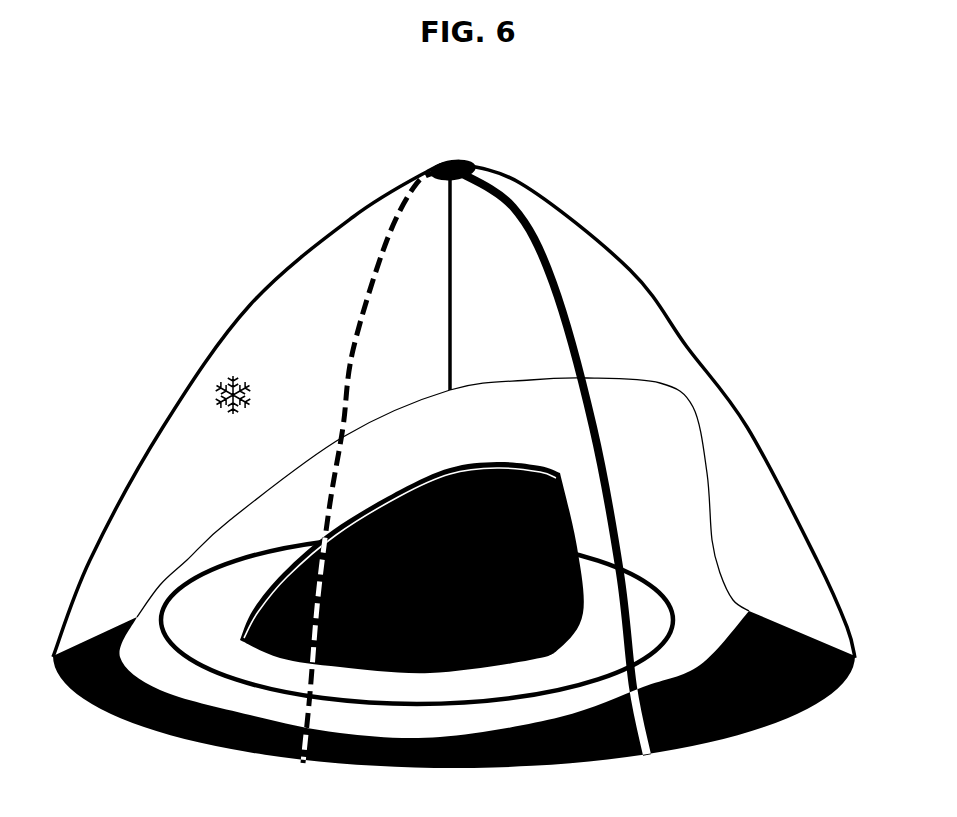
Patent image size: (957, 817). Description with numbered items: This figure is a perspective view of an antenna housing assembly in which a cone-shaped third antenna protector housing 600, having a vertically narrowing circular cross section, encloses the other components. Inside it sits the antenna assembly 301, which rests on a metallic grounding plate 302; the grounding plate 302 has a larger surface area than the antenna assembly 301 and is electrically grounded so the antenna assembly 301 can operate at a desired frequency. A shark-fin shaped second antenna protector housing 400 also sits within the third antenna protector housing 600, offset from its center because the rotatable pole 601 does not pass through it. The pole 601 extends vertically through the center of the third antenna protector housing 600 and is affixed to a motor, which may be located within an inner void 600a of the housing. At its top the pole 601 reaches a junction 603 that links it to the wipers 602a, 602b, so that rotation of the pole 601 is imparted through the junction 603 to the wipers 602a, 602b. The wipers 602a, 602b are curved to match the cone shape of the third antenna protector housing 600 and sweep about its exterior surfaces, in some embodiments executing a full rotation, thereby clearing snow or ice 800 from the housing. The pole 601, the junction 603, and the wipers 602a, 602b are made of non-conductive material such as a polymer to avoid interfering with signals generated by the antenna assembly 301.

The third antenna protector housing 600 is at (630, 270).
The inner void 600a is at (794, 584).
The rotatable pole 601 is at (460, 362).
The wiper 602a is at (545, 238).
The wiper 602b is at (385, 238).
The junction 603 is at (450, 157).
The second antenna protector housing 400 is at (666, 383).
The antenna assembly 301 is at (466, 458).
The metallic grounding plate 302 is at (229, 636).
The snow or ice 800 is at (216, 390).